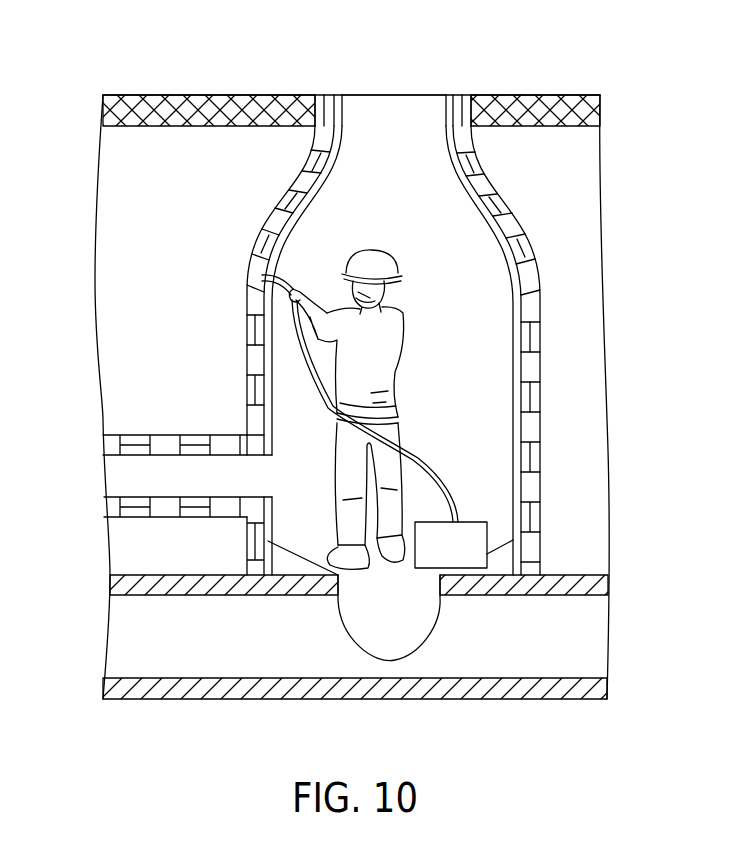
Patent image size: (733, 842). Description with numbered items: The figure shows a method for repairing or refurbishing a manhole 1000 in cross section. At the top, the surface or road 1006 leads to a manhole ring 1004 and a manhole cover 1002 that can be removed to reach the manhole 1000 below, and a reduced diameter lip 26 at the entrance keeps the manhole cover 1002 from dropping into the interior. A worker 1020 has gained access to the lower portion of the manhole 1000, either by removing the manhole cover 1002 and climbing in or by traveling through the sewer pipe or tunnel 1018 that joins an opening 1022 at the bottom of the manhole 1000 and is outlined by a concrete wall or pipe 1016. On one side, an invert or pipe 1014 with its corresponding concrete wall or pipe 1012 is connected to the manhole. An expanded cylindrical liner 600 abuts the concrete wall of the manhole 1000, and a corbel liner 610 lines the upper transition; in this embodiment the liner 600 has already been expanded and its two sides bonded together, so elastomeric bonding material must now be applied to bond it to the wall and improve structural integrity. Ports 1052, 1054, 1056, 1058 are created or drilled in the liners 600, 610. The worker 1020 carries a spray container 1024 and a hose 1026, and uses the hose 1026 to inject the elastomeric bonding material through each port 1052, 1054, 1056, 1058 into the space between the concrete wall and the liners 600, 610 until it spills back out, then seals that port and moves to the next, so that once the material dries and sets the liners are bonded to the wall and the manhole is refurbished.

The manhole 1000 is at (300, 89).
The manhole cover 1002 is at (388, 108).
The manhole ring 1004 is at (462, 108).
The surface or road 1006 is at (532, 110).
The reduced diameter lip 26 is at (320, 146).
The corbel liner 610 is at (490, 205).
The expanded cylindrical portion (liner) 600 is at (522, 292).
The port 1052 is at (267, 277).
The port 1054 is at (267, 338).
The port 1056 is at (522, 337).
The port 1058 is at (522, 403).
The concrete wall or pipe 1012 is at (170, 445).
The invert or pipe 1014 is at (117, 462).
The concrete wall or pipe 1016 is at (120, 583).
The sewer pipe or tunnel 1018 is at (128, 640).
The worker 1020 is at (392, 328).
The opening 1022 is at (427, 607).
The spray container 1024 is at (462, 547).
The hose 1026 is at (430, 463).